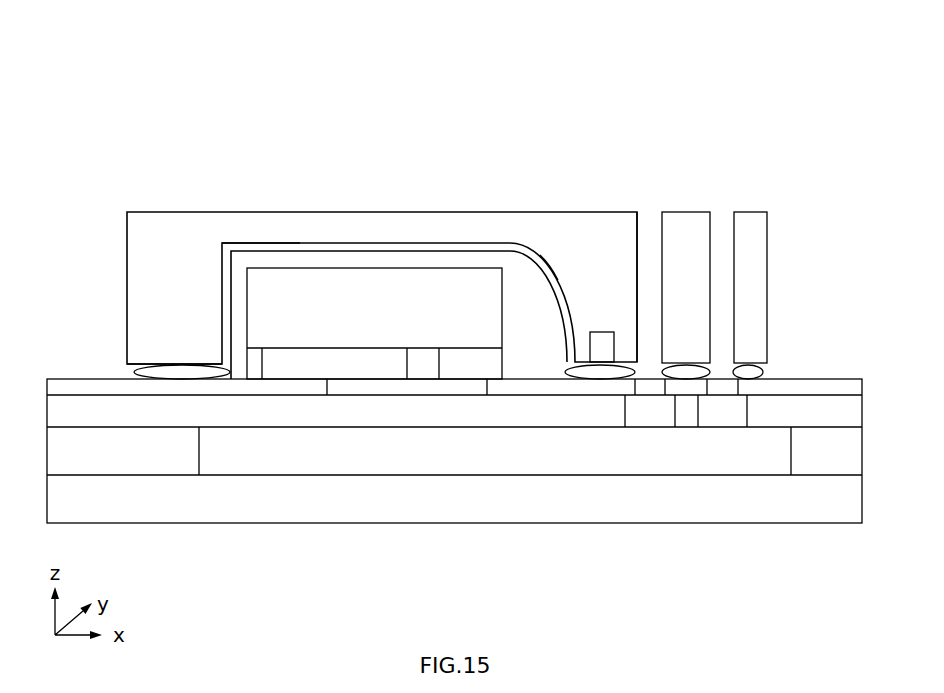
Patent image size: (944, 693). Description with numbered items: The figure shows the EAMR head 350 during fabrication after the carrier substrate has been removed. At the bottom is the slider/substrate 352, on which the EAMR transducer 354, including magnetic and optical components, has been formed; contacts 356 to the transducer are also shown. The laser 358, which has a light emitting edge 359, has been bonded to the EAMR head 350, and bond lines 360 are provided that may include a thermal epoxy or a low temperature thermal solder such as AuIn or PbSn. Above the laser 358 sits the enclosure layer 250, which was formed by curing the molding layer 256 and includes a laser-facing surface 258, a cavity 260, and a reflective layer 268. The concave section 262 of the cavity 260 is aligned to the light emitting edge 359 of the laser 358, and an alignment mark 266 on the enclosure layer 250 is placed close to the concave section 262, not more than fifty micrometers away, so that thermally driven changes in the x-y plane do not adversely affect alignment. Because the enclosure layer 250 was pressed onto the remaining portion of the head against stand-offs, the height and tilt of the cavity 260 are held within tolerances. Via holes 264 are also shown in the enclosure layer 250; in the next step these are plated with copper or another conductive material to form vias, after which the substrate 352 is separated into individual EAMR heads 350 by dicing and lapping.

The EAMR head 350 is at (434, 72).
The enclosure layer 250 is at (805, 258).
The molding layer 256 is at (167, 212).
The laser-facing surface 258 is at (199, 340).
The cavity 260 is at (267, 243).
The concave section 262 is at (570, 256).
The via holes 264 is at (654, 188).
The alignment mark 266 is at (599, 304).
The reflective layer 268 is at (290, 251).
The slider/substrate 352 is at (455, 524).
The EAMR transducer 354 is at (213, 477).
The slider pads 356 is at (664, 379).
The laser 358 is at (263, 379).
The light emitting edge 359 is at (518, 330).
The bond lines 360 is at (168, 379).